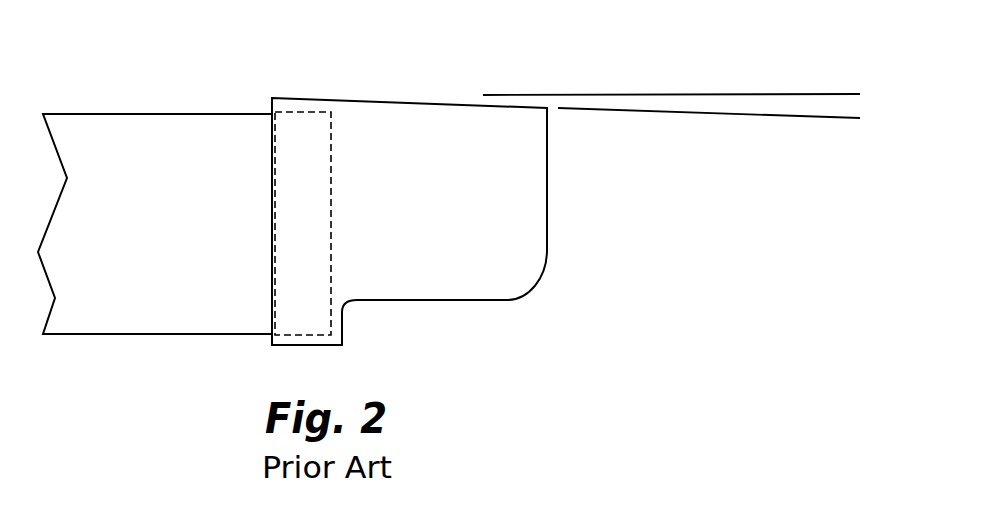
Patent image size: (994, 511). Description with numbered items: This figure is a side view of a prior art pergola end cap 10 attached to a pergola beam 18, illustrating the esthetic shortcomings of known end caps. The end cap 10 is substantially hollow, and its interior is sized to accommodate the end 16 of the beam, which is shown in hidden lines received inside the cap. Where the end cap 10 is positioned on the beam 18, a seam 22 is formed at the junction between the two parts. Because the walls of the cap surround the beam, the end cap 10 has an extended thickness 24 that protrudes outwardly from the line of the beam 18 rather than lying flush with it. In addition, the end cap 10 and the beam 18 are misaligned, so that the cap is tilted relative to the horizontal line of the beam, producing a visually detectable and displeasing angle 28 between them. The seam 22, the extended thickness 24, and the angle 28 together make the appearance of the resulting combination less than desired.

The pergola end cap 10 is at (463, 171).
The end of a pergola beam 16 is at (336, 189).
The pergola beam 18 is at (165, 236).
The seam 22 is at (272, 287).
The extended thickness 24 is at (250, 99).
The angle 28 is at (775, 152).